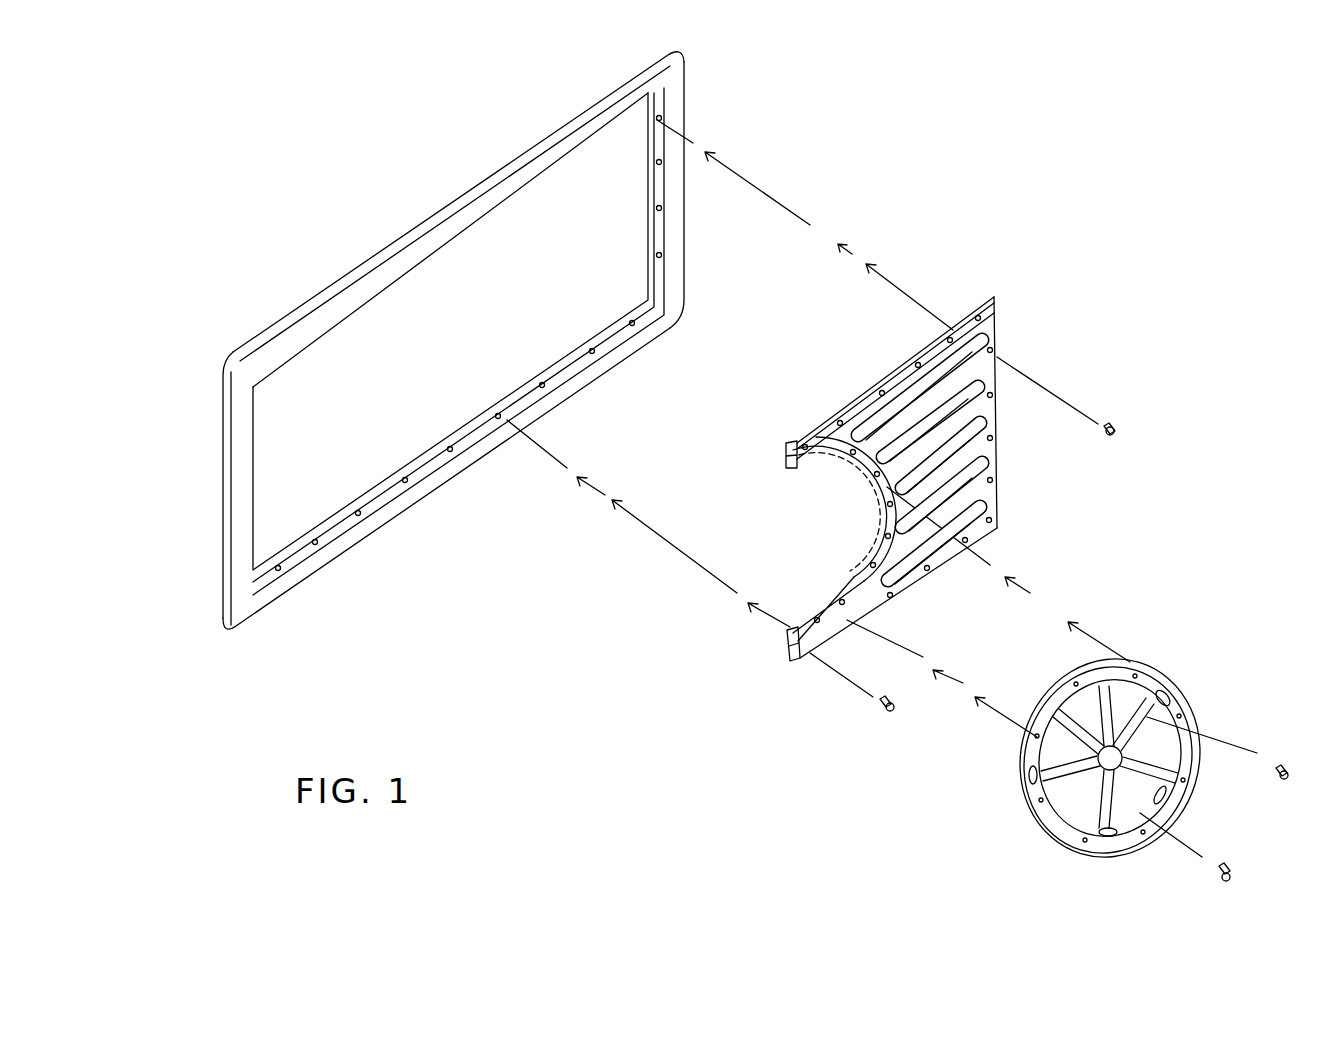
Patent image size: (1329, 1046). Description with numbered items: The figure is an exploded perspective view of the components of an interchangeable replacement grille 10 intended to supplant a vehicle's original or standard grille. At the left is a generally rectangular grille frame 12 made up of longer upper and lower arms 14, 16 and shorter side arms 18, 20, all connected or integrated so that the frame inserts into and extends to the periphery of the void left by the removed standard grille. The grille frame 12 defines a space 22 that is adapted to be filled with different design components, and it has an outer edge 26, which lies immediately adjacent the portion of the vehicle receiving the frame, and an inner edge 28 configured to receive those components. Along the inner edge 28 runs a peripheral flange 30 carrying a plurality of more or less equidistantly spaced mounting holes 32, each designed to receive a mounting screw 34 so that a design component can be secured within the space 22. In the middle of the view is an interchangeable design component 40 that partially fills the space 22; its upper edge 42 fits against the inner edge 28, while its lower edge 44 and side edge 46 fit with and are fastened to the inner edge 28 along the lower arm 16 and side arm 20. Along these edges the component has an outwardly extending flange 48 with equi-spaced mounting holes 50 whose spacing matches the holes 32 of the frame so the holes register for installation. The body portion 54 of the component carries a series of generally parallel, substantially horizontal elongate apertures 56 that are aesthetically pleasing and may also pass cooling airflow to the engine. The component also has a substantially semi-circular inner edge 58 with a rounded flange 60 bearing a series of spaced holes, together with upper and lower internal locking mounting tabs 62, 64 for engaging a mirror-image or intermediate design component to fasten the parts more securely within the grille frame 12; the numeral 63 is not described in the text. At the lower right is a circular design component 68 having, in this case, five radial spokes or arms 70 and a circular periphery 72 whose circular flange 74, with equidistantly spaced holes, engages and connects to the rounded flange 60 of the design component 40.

The interchangeable replacement grille 10 is at (320, 161).
The grille frame 12 is at (227, 345).
The upper arm 14 is at (383, 277).
The lower arm 16 is at (283, 590).
The side arm 18 is at (231, 479).
The side arm 20 is at (680, 207).
The space 22 is at (320, 355).
The outer edge 26 is at (603, 103).
The inner edge 28 is at (540, 172).
The peripheral flange 30 is at (390, 500).
The mounting holes 32 is at (320, 540).
The mounting screw 34 is at (887, 710).
The interchangeable design component 40 is at (997, 327).
The upper edge 42 is at (947, 330).
The lower edge 44 is at (993, 530).
The side edge 46 is at (995, 420).
The outwardly extending flange 48 is at (900, 367).
The mounting holes 50 is at (847, 407).
The body portion 54 is at (980, 453).
The elongate apertures 56 is at (980, 507).
The semi-circular inner edge 58 is at (847, 603).
The rounded flange 60 is at (785, 623).
The upper internal locking mounting tab 62 is at (787, 460).
The arcuate flange 63 is at (867, 573).
The lower internal locking mounting tab 64 is at (800, 660).
The circular design component 68 is at (1143, 677).
The radial spokes 70 is at (1150, 717).
The circular periphery 72 is at (1180, 762).
The circular flange 74 is at (1045, 840).